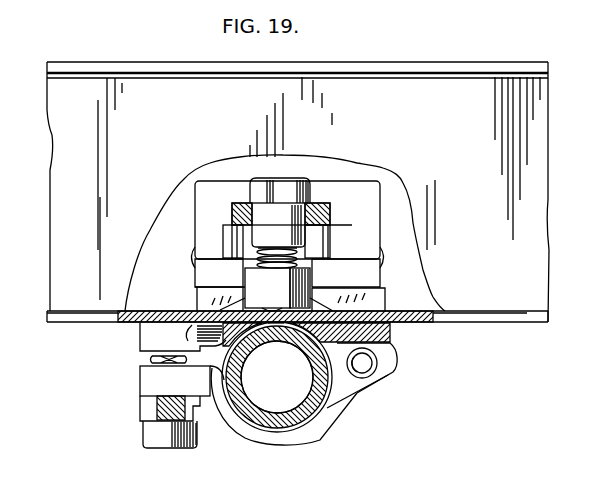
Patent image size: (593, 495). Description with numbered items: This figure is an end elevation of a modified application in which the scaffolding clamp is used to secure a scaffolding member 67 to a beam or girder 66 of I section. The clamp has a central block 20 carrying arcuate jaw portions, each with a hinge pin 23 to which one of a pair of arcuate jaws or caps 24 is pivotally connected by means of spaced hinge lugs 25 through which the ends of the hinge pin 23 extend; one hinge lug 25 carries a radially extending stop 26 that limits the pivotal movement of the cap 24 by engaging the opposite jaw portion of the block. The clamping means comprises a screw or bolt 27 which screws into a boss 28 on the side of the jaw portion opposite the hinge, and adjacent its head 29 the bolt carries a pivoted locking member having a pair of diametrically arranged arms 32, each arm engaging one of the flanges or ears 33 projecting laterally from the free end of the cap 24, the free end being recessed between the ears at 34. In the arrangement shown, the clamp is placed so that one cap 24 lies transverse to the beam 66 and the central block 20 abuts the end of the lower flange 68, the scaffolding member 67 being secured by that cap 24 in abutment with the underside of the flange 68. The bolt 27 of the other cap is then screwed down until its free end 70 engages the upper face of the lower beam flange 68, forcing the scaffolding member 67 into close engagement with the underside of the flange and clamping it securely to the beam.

The central block 20 is at (373, 298).
The hinge pin 23 is at (371, 371).
The arcuate jaw or cap 24 is at (368, 192).
The hinge lug 25 is at (212, 273).
The stop lug 26 is at (394, 360).
The clamping screw or bolt 27 is at (307, 265).
The boss 28 is at (155, 332).
The bolt head 29 is at (283, 187).
The arm or abutment 32 is at (232, 213).
The flange or ear 33 is at (325, 243).
The recess 34 is at (150, 386).
The beam or girder 66 is at (87, 212).
The scaffolding member 67 is at (299, 418).
The lower beam flange 68 is at (80, 322).
The free end of bolt 70 is at (274, 324).